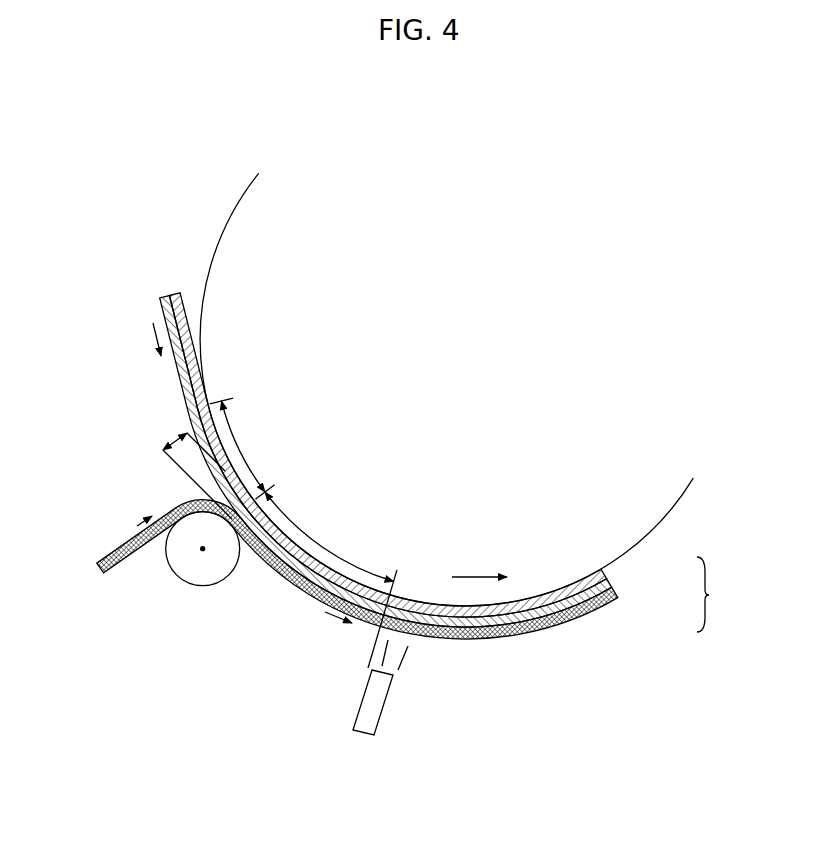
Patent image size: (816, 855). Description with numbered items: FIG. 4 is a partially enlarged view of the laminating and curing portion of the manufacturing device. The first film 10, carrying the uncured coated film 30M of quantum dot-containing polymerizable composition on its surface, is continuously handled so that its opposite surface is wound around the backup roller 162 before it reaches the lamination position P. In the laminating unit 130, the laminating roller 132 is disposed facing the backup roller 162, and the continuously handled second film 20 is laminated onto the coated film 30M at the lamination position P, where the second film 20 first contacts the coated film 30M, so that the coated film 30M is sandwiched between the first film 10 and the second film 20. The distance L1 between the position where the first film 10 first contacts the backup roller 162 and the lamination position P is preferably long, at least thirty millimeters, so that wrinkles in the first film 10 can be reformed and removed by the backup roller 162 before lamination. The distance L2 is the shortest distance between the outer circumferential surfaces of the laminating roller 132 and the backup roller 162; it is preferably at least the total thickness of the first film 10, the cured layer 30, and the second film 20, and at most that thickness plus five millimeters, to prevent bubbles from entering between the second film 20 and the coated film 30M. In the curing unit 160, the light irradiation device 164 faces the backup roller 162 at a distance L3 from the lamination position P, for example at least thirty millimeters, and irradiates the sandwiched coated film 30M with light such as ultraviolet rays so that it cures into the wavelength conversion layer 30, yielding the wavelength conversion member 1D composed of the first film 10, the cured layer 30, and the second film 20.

The wavelength conversion member 1D is at (719, 594).
The first film 10 is at (185, 292).
The second film 20 is at (133, 558).
The wavelength conversion layer (cured layer) 30 is at (385, 462).
The coated film 30M is at (160, 306).
The laminating unit 130 is at (122, 278).
The laminating roller 132 is at (205, 586).
The curing unit 160 is at (453, 773).
The backup roller 162 is at (244, 198).
The light irradiation device 164 is at (365, 736).
The lamination position P is at (246, 558).
The distance L1 is at (242, 448).
The distance L2 is at (190, 469).
The distance L3 is at (331, 580).